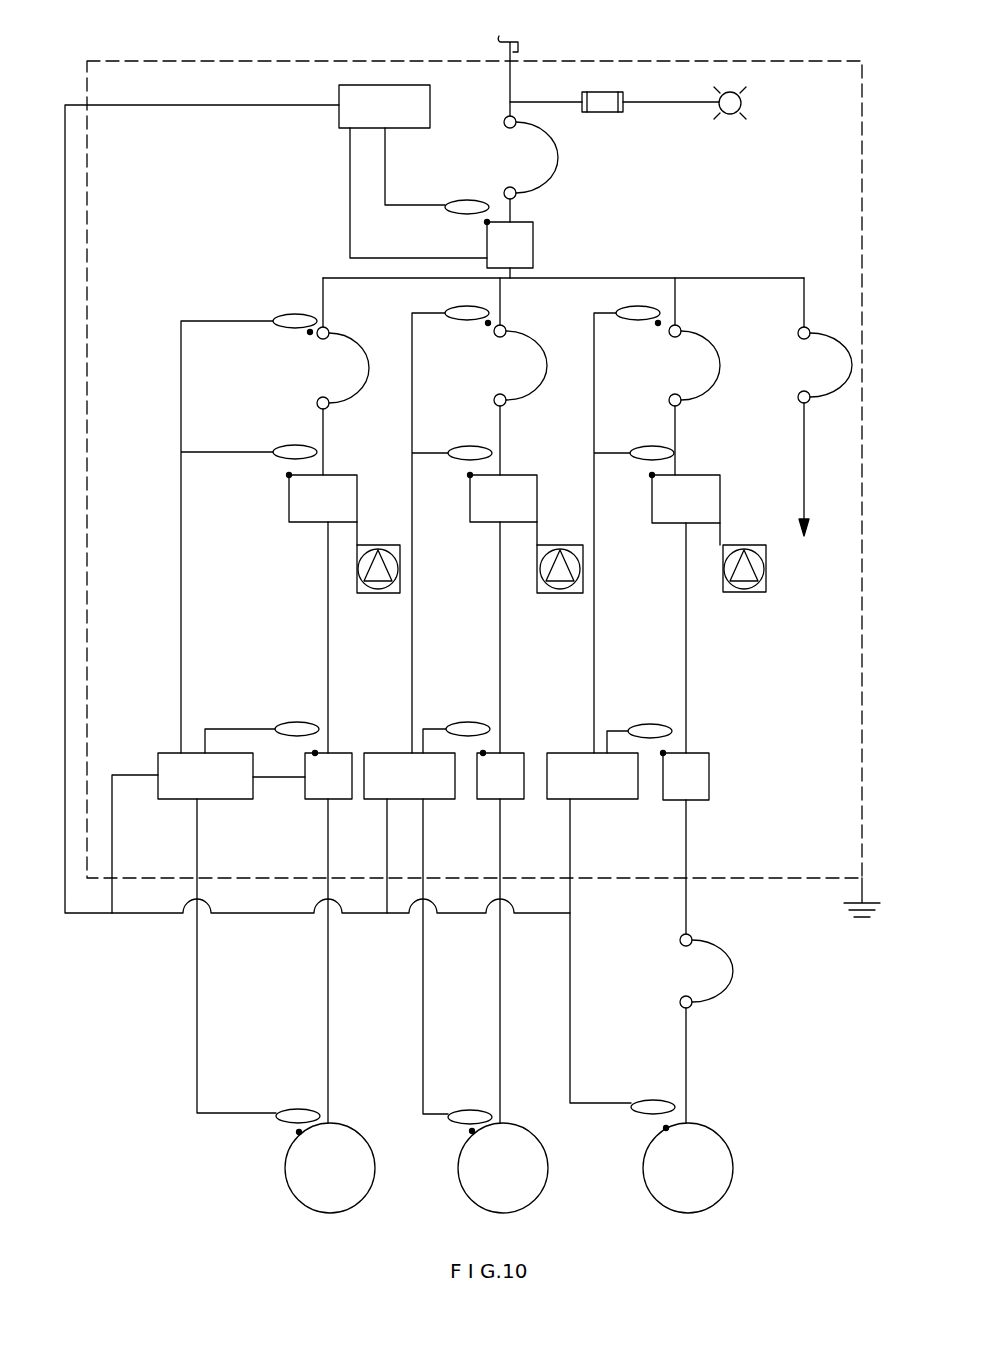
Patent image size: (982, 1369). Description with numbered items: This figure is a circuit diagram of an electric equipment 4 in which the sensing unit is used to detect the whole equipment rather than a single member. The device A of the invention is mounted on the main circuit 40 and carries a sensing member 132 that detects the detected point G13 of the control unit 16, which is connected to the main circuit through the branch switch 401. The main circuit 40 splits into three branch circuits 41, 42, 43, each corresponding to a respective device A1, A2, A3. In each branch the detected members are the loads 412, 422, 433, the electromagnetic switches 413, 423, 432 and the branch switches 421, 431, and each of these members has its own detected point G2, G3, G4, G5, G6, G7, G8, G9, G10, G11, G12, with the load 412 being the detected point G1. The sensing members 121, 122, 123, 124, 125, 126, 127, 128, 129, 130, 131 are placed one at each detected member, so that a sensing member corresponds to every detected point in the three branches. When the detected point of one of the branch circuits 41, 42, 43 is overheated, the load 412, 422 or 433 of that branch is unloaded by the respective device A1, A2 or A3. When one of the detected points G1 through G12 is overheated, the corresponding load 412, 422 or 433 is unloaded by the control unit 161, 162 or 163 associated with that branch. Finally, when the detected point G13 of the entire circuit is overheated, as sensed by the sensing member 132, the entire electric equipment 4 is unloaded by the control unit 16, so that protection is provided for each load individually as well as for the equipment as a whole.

The electric equipment 4 is at (781, 896).
The device A is at (339, 85).
The main circuit 40 is at (528, 52).
The branch switch 401 is at (553, 157).
The sensing member 132 is at (459, 199).
The control unit 16 is at (533, 253).
The branch circuit 41 is at (319, 294).
The branch circuit 42 is at (503, 313).
The branch circuit 43 is at (675, 303).
The branch switch 421 is at (545, 355).
The branch switch 431 is at (726, 356).
The sensing member 123 is at (272, 312).
The sensing member 124 is at (294, 444).
The sensing member 127 is at (464, 444).
The sensing member 128 is at (451, 317).
The sensing member 131 is at (638, 304).
The electromagnetic switch 413 is at (348, 474).
The electromagnetic switch 423 is at (515, 474).
The electromagnetic switch 432 is at (704, 474).
The device A1 is at (158, 753).
The device A2 is at (370, 753).
The device A3 is at (568, 753).
The sensing member 122 is at (286, 718).
The sensing member 126 is at (461, 718).
The sensing member 130 is at (649, 724).
The control unit 161 is at (308, 799).
The control unit 162 is at (481, 799).
The control unit 163 is at (663, 800).
The sensing member 121 is at (295, 1108).
The sensing member 125 is at (475, 1108).
The sensing member 129 is at (646, 1098).
The load 412 is at (353, 1128).
The load 422 is at (527, 1127).
The load 433 is at (720, 1125).
The detected point G1 is at (299, 1132).
The detected point G2 is at (315, 753).
The detected point G3 is at (289, 475).
The detected point G4 is at (310, 332).
The detected point G5 is at (472, 1131).
The detected point G6 is at (483, 753).
The detected point G7 is at (470, 475).
The detected point G8 is at (488, 323).
The detected point G9 is at (666, 1128).
The detected point G10 is at (663, 753).
The detected point G11 is at (652, 475).
The detected point G12 is at (658, 323).
The detected point G13 is at (487, 222).